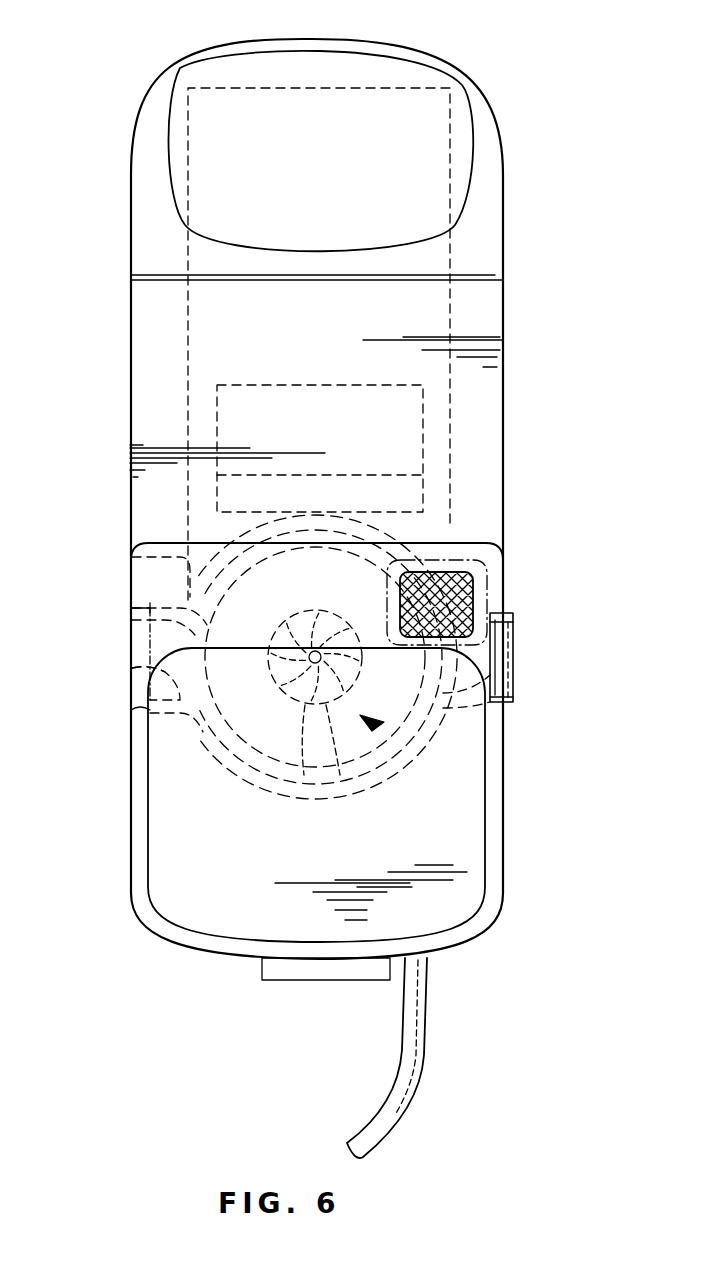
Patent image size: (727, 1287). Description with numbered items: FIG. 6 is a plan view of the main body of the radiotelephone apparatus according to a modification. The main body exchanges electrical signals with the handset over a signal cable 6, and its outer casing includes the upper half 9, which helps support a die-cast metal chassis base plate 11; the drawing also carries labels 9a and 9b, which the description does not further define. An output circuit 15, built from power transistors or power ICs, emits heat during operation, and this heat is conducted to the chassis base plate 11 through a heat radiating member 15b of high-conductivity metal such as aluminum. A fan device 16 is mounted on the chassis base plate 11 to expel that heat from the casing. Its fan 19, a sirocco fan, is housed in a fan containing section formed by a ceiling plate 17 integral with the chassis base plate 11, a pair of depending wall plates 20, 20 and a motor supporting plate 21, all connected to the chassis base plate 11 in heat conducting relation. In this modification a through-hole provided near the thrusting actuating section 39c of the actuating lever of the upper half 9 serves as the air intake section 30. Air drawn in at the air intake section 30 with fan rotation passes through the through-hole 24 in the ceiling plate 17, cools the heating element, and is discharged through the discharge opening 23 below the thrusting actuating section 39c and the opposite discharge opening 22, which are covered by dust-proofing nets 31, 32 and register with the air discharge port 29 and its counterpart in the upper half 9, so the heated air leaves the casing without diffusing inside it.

The signal cable 6 is at (425, 1080).
The upper half 9 is at (503, 297).
The front cover of housing 9a is at (423, 907).
The rear casing of housing 9b is at (407, 115).
The chassis base plate 11 is at (467, 177).
The output circuit 15 is at (415, 413).
The heat radiating member 15b is at (415, 497).
The fan device 16 is at (382, 728).
The ceiling plate 17 is at (131, 618).
The fan 19 is at (350, 787).
The wall plates 20 is at (130, 556).
The motor supporting plate 21 is at (223, 777).
The discharge opening 22 is at (131, 673).
The discharge opening 23 is at (513, 678).
The air suction port 24 is at (312, 783).
The air discharge port 29 is at (503, 555).
The air intake section 30 is at (513, 632).
The dust-proofing net 31 is at (131, 710).
The dust-proofing net 32 is at (510, 702).
The thrusting actuating section 39c is at (513, 660).